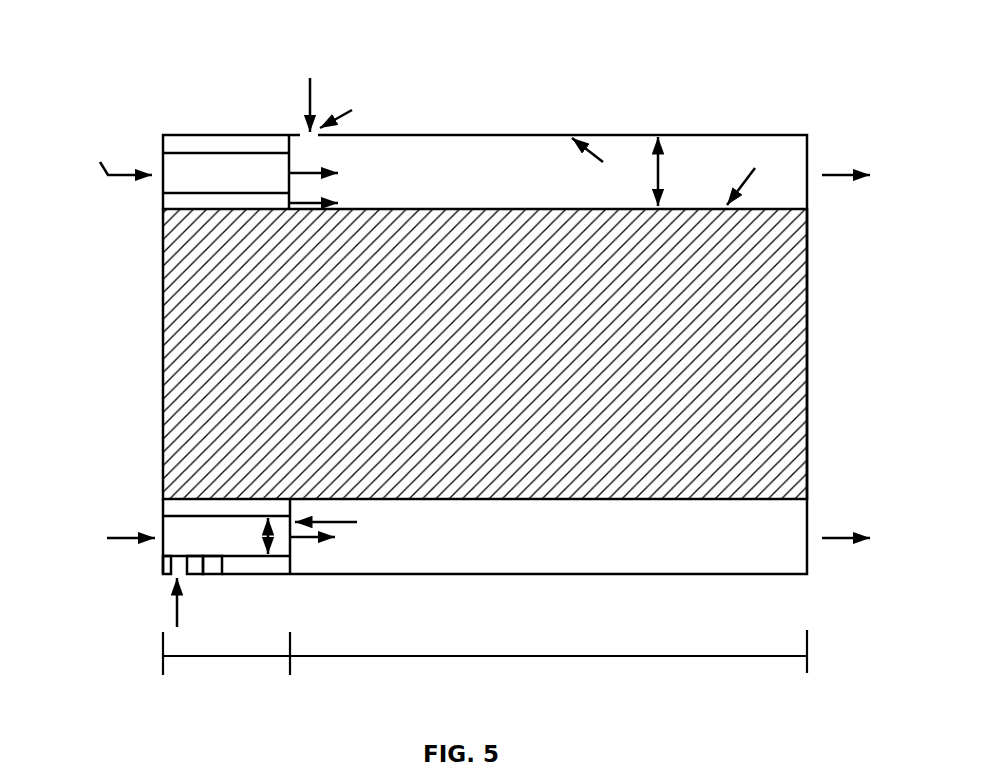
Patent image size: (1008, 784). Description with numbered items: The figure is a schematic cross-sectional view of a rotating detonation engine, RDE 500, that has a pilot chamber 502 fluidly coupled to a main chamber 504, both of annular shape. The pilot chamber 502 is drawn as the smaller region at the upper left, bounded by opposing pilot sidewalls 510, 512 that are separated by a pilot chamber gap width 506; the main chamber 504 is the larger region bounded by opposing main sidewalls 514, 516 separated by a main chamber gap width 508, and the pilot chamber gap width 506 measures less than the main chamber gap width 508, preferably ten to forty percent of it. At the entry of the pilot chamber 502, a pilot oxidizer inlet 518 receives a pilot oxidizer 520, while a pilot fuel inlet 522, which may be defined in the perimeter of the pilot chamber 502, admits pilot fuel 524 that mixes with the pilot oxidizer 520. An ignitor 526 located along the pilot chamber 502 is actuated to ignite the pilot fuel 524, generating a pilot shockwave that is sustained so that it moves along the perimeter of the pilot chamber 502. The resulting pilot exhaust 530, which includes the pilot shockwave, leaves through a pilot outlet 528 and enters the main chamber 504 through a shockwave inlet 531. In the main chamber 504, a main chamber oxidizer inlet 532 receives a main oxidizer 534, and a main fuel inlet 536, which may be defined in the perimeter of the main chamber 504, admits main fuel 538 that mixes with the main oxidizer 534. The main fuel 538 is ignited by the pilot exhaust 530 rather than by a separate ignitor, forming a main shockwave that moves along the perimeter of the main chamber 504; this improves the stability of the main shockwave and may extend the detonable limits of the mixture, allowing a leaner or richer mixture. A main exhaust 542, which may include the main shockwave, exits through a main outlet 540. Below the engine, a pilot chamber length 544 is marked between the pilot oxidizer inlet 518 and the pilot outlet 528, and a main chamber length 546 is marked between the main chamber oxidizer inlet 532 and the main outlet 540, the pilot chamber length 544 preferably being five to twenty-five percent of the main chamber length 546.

The RDE 500 is at (127, 67).
The pilot chamber 502 is at (231, 172).
The main chamber 504 is at (562, 172).
The pilot chamber gap width 506 is at (265, 536).
The main chamber gap width 508 is at (658, 172).
The pilot sidewall 510 is at (182, 152).
The pilot sidewall 512 is at (190, 193).
The main sidewall 514 is at (608, 165).
The main sidewall 516 is at (754, 174).
The pilot oxidizer inlet 518 is at (157, 558).
The pilot oxidizer 520 is at (110, 154).
The pilot fuel inlet 522 is at (188, 578).
The pilot fuel 524 is at (175, 613).
The ignitor 526 is at (220, 567).
The pilot outlet 528 is at (293, 555).
The pilot exhaust 530 is at (305, 540).
The shockwave inlet 531 is at (342, 536).
The main chamber oxidizer inlet 532 is at (287, 147).
The main oxidizer 534 is at (322, 202).
The main fuel inlet 536 is at (354, 108).
The main fuel 538 is at (310, 93).
The main outlet 540 is at (808, 568).
The main exhaust 542 is at (837, 172).
The pilot chamber length 544 is at (243, 657).
The main chamber length 546 is at (483, 656).